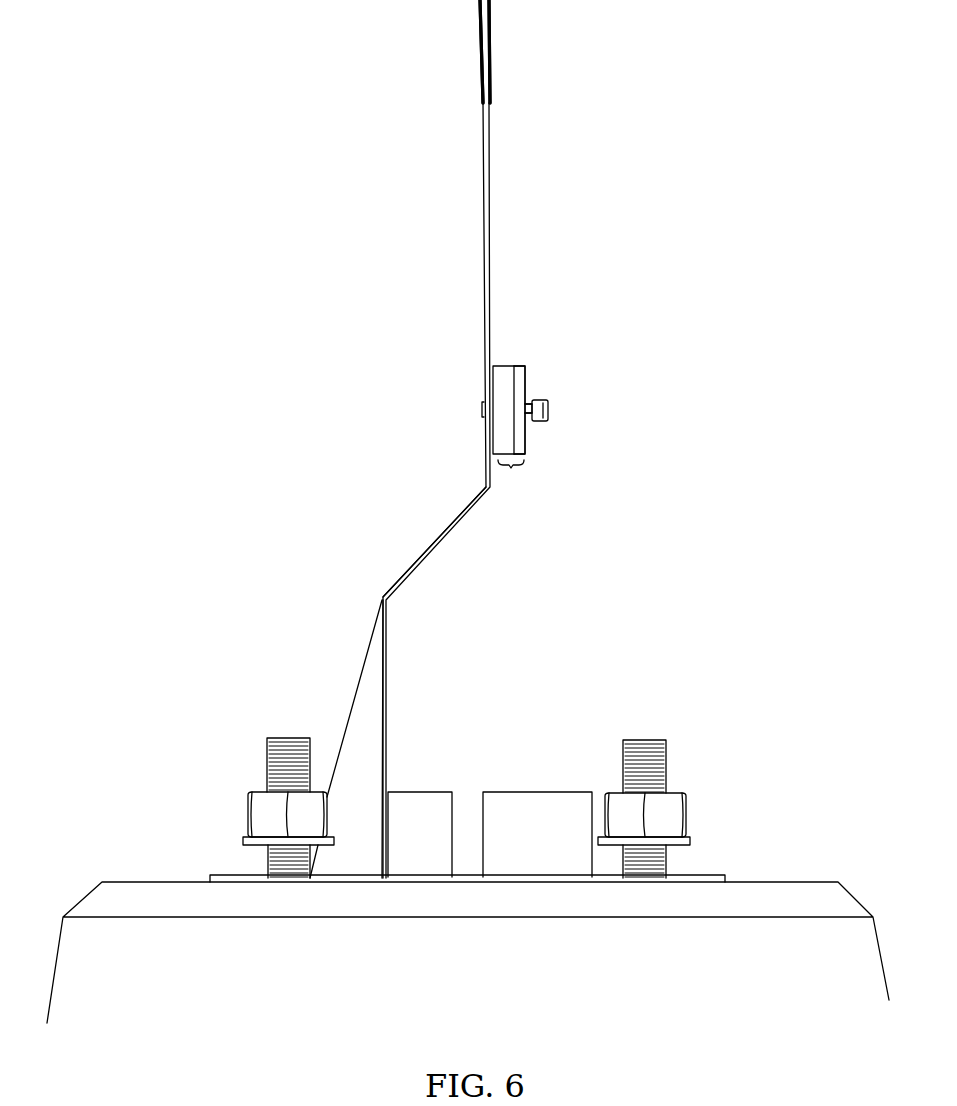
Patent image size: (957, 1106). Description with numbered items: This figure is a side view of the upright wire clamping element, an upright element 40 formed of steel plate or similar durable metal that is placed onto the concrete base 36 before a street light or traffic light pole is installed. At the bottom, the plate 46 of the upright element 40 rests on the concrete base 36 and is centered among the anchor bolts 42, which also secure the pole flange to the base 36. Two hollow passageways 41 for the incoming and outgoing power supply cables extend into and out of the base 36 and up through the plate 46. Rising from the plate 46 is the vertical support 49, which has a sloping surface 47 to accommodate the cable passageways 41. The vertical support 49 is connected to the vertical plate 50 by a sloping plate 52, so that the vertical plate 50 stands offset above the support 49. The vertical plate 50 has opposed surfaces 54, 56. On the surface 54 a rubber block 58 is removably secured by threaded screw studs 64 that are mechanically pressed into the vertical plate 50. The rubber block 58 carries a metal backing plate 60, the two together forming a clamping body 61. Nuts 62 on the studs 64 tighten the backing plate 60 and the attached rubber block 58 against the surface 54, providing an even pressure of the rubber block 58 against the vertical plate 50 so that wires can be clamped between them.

The concrete base 36 is at (103, 886).
The upright element 40 is at (457, 439).
The passageways 41 is at (505, 797).
The anchor bolts 42 is at (253, 782).
The plate 46 is at (716, 875).
The sloping surface 47 is at (362, 680).
The vertical support 49 is at (389, 675).
The vertical plate 50 is at (491, 263).
The sloping plate 52 is at (436, 545).
The surface 54 is at (504, 198).
The surface 56 is at (479, 153).
The rubber block 58 is at (498, 366).
The metal backing plate 60 is at (526, 378).
The clamping body 61 is at (511, 470).
The nuts 62 is at (549, 408).
The threaded screw studs 64 is at (528, 412).